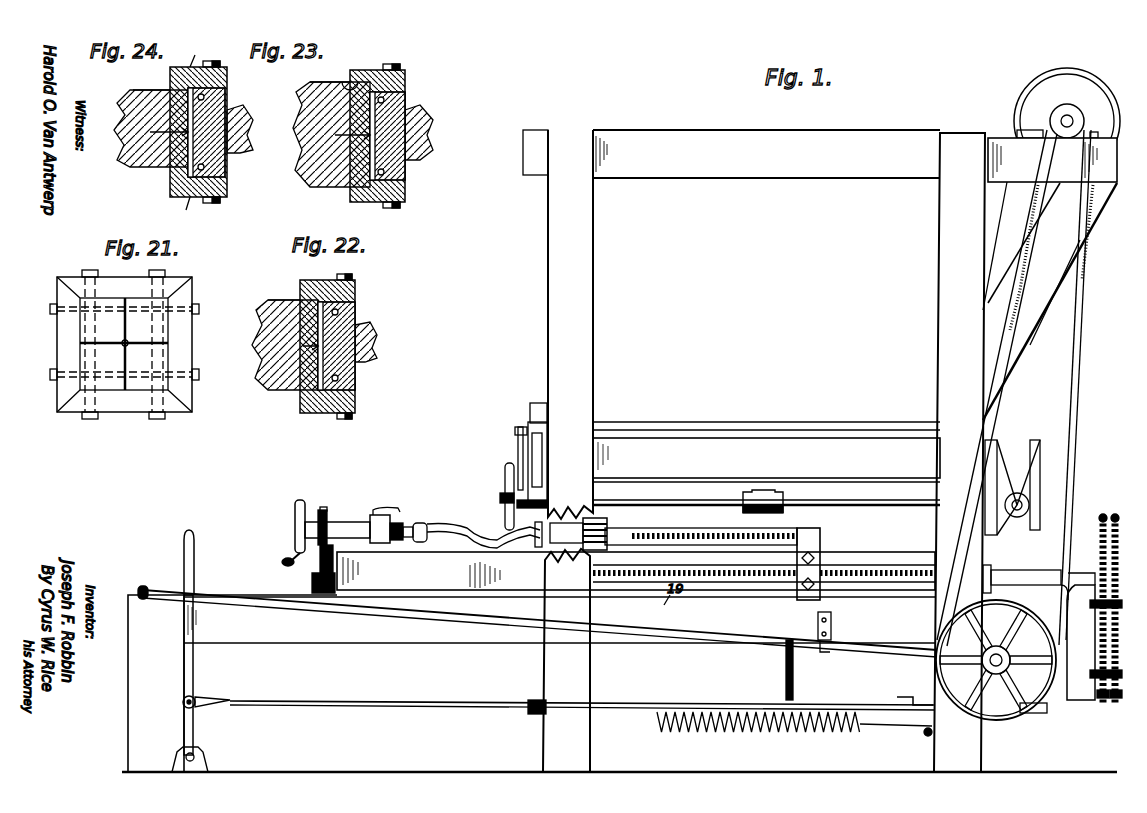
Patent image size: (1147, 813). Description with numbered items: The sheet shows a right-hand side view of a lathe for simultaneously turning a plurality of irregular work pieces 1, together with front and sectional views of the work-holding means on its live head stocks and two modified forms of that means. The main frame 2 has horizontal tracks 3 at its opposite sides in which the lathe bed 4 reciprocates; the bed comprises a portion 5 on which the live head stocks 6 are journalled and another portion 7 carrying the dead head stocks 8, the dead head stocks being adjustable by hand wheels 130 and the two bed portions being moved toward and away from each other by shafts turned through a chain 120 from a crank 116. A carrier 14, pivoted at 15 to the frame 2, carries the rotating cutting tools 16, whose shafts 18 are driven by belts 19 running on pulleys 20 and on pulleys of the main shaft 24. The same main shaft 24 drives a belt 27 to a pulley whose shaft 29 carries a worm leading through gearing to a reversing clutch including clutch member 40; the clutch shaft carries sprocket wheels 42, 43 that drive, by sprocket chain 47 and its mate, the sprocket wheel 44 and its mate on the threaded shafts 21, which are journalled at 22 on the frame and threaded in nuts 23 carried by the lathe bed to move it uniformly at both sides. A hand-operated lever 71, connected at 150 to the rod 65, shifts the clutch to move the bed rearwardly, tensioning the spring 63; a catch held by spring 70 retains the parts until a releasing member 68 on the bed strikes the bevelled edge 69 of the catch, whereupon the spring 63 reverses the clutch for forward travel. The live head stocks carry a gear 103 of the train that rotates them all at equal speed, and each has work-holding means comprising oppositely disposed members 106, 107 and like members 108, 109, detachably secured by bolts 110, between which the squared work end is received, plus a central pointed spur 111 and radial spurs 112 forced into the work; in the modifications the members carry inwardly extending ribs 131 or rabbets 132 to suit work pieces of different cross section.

In FIG. 24, the work pieces 1 is at (150, 150).
In FIG. 23, the work pieces 1 is at (300, 150).
In FIG. 22, the work pieces 1 is at (288, 385).
In FIG. 1, the main frame 2 is at (488, 100).
In FIG. 1, the horizontal tracks 3 is at (275, 472).
In FIG. 1, the lathe bed 4 is at (875, 516).
In FIG. 1, the lathe bed portion 5 is at (1146, 387).
In FIG. 1, the live head stocks 6 is at (642, 240).
In FIG. 1, the lathe bed portion 7 is at (636, 571).
In FIG. 1, the dead head stocks 8 is at (405, 522).
In FIG. 1, the carrier 14 is at (742, 470).
In FIG. 1, the pivot 15 is at (1026, 500).
In FIG. 1, the cutting tools 16 is at (505, 480).
In FIG. 1, the tool shafts 18 is at (902, 515).
In FIG. 1, the belts 19 is at (1008, 462).
In FIG. 1, the pulleys 20 is at (1024, 510).
In FIG. 1, the threaded shafts 21 is at (868, 578).
In FIG. 1, the journals 22 is at (593, 583).
In FIG. 21, the journals 22 is at (60, 343).
In FIG. 1, the nuts 23 is at (797, 585).
In FIG. 1, the main shaft 24 is at (1069, 118).
In FIG. 1, the belt 27 is at (1072, 485).
In FIG. 1, the shaft 29 is at (1012, 650).
In FIG. 1, the clutch member 40 is at (1078, 623).
In FIG. 1, the sprocket wheel 42 is at (1100, 700).
In FIG. 1, the sprocket wheel 43 is at (1114, 700).
In FIG. 1, the sprocket wheel 44 is at (970, 665).
In FIG. 1, the sprocket chain 47 is at (1100, 518).
In FIG. 1, the spring 63 is at (735, 729).
In FIG. 1, the rod 65 is at (395, 712).
In FIG. 1, the releasing member 68 is at (798, 680).
In FIG. 1, the bevelled edge 69 is at (897, 699).
In FIG. 1, the spring 70 is at (440, 535).
In FIG. 1, the hand-operated lever 71 is at (197, 560).
In FIG. 1, the gear 103 is at (600, 518).
In FIG. 21, the work-holding member 106 is at (124, 344).
In FIG. 21, the work-holding member 107 is at (126, 403).
In FIG. 24, the work-holding member 108 is at (200, 197).
In FIG. 23, the work-holding member 108 is at (378, 202).
In FIG. 21, the work-holding member 108 is at (69, 343).
In FIG. 22, the work-holding member 108 is at (320, 413).
In FIG. 24, the work-holding member 109 is at (226, 92).
In FIG. 23, the work-holding member 109 is at (362, 70).
In FIG. 21, the work-holding member 109 is at (181, 343).
In FIG. 22, the work-holding member 109 is at (303, 290).
In FIG. 24, the bolts 110 is at (208, 61).
In FIG. 23, the bolts 110 is at (400, 70).
In FIG. 21, the bolts 110 is at (98, 277).
In FIG. 22, the bolts 110 is at (352, 278).
In FIG. 24, the central pointed spur 111 is at (160, 170).
In FIG. 23, the central pointed spur 111 is at (322, 187).
In FIG. 21, the central pointed spur 111 is at (128, 340).
In FIG. 22, the central pointed spur 111 is at (305, 348).
In FIG. 24, the radially extending spurs 112 is at (130, 95).
In FIG. 23, the radially extending spurs 112 is at (340, 188).
In FIG. 21, the radially extending spurs 112 is at (120, 345).
In FIG. 22, the radially extending spurs 112 is at (352, 322).
In FIG. 21, the crank 116 is at (199, 306).
In FIG. 1, the chain 120 is at (326, 522).
In FIG. 1, the hand wheels 130 is at (300, 500).
In FIG. 24, the inwardly extending ribs 131 is at (190, 67).
In FIG. 23, the rabbets 132 is at (345, 80).
In FIG. 1, the connection 150 is at (197, 699).